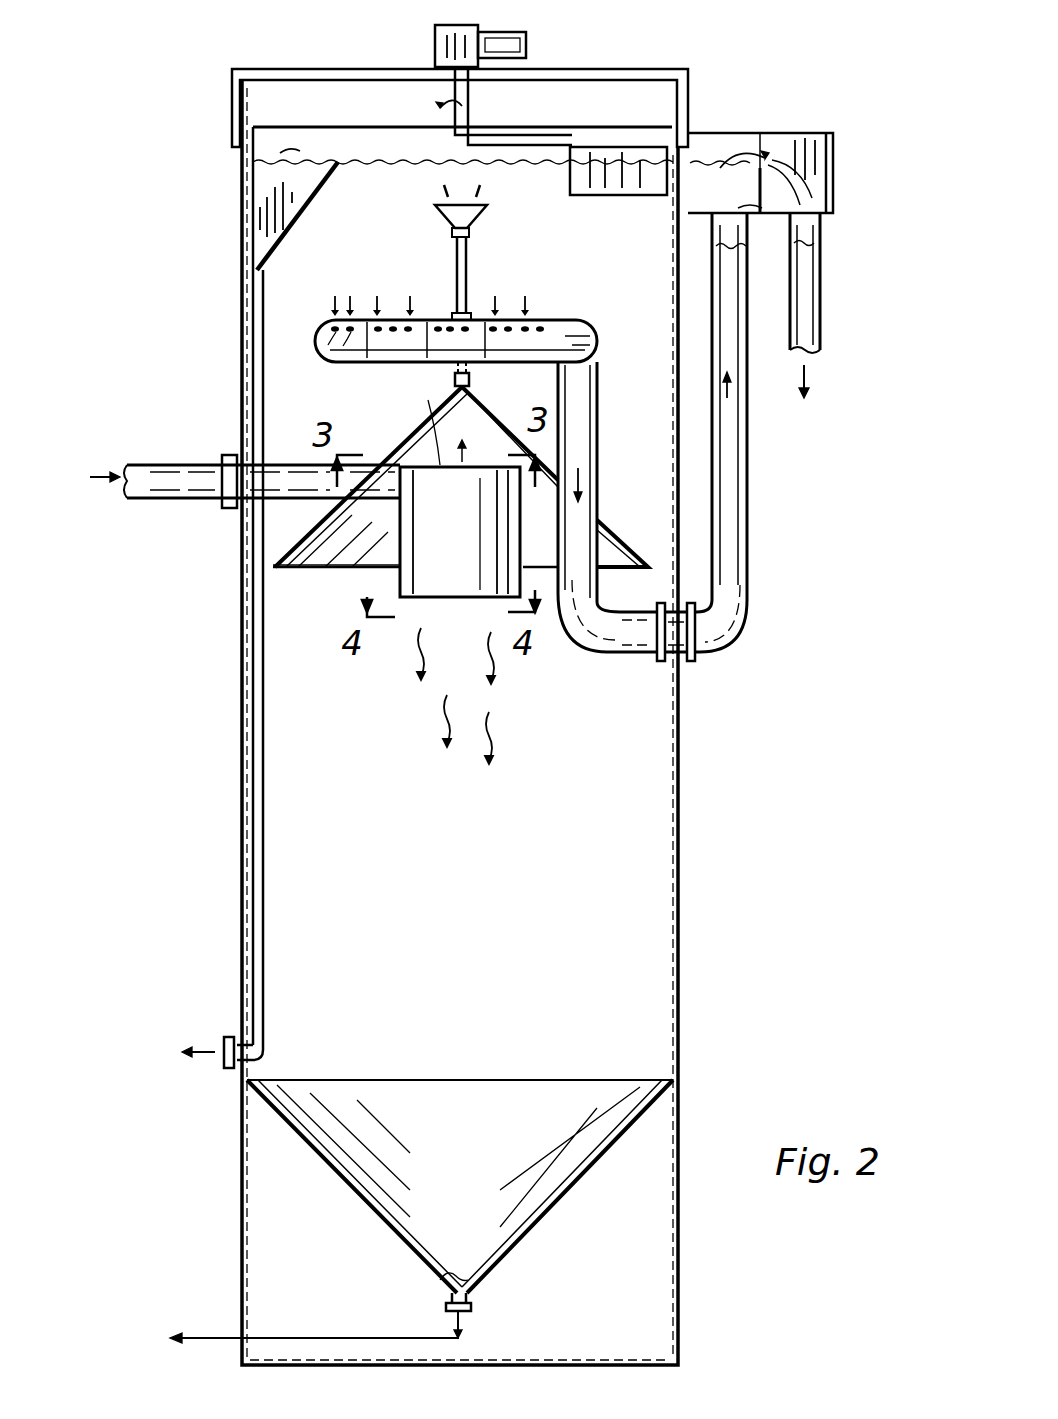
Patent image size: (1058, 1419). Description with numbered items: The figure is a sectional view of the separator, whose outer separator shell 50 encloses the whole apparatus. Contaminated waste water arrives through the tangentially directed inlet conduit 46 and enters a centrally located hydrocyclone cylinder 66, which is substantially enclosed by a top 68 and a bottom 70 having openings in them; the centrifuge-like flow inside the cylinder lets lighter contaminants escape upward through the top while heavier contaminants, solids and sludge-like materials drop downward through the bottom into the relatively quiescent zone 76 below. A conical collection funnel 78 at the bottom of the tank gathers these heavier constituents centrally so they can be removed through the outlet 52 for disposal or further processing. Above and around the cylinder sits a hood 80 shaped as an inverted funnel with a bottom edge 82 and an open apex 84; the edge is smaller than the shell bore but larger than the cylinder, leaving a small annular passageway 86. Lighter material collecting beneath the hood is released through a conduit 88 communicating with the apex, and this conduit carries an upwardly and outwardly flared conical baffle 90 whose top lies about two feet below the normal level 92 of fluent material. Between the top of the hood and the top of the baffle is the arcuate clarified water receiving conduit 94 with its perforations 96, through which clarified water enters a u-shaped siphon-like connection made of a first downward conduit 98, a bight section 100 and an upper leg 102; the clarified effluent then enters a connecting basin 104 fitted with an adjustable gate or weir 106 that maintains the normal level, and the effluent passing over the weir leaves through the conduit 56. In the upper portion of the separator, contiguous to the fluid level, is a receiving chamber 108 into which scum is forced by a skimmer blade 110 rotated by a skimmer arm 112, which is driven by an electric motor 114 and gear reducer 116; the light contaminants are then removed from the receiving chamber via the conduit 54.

The inlet conduit 46 is at (165, 498).
The separator shell 50 is at (683, 860).
The outlet 52 is at (472, 1303).
The conduit 54 is at (238, 1066).
The conduit 56 is at (805, 316).
The hydrocyclone cylinder 66 is at (425, 543).
The top 68 is at (440, 422).
The bottom 70 is at (455, 600).
The quiescent zone 76 is at (458, 860).
The conical collection funnel 78 is at (585, 1175).
The hood 80 is at (612, 535).
The bottom edge 82 is at (323, 572).
The open apex 84 is at (472, 381).
The annular passageway 86 is at (655, 568).
The conduit 88 is at (468, 286).
The conical baffle 90 is at (482, 222).
The normal level 92 is at (395, 162).
The clarified water receiving conduit 94 is at (545, 338).
The perforations 96 is at (343, 346).
The first downward conduit 98 is at (588, 440).
The bight section 100 is at (735, 643).
The upper leg 102 is at (749, 492).
The connecting basin 104 is at (729, 182).
The adjustable gate or weir 106 is at (833, 175).
The receiving chamber 108 is at (313, 196).
The skimmer blade 110 is at (620, 152).
The skimmer arm 112 is at (528, 147).
The electric motor 114 is at (527, 42).
The gear reducer 116 is at (440, 42).